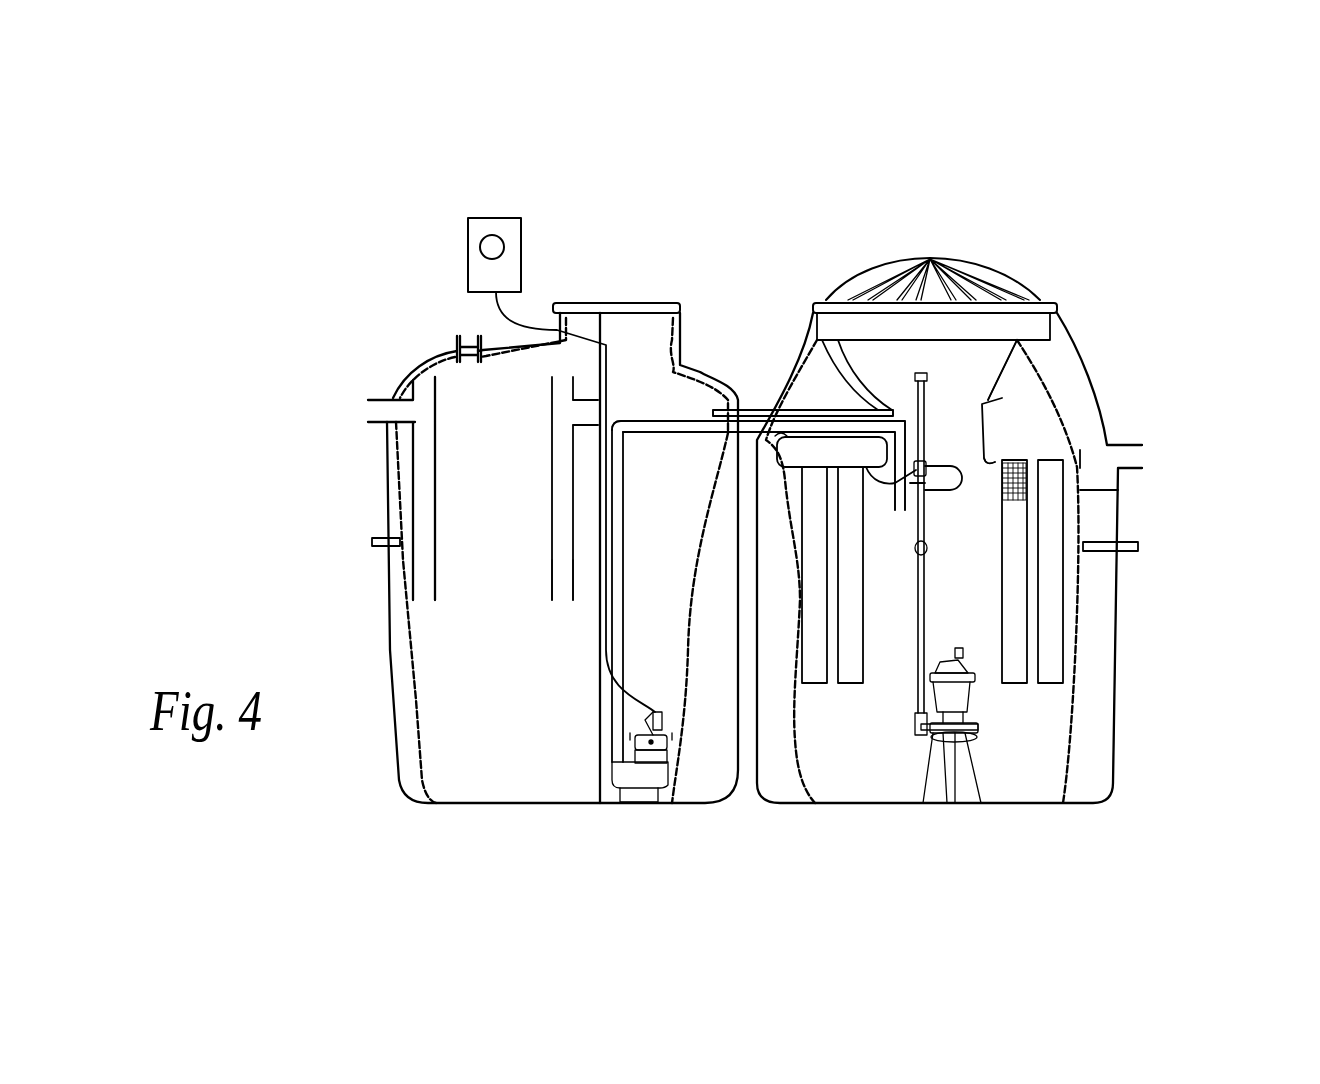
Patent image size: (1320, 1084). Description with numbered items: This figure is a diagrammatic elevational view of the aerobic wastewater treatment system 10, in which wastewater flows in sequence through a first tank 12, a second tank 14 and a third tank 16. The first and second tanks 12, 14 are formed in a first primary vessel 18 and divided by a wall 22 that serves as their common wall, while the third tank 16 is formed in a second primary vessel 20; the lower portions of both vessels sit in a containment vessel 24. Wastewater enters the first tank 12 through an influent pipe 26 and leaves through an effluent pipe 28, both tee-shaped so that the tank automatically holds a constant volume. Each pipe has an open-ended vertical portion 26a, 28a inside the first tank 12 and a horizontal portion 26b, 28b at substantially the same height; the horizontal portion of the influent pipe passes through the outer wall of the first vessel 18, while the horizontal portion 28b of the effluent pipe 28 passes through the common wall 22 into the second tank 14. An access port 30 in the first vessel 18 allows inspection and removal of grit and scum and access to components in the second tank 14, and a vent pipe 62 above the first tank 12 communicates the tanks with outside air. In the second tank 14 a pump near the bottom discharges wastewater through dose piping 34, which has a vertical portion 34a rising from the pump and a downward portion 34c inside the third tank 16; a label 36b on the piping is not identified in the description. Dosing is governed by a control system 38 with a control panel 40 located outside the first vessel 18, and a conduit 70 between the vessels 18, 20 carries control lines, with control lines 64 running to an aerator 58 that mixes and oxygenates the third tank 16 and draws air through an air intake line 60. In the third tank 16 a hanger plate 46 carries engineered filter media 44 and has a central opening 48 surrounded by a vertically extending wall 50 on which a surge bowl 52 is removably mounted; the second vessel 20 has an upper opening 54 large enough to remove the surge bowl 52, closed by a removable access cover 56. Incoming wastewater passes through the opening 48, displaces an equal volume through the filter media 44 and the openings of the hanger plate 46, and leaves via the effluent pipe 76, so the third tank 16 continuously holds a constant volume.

The aerobic wastewater treatment system 10 is at (726, 168).
The first tank 12 is at (497, 708).
The second tank 14 is at (664, 647).
The third tank 16 is at (857, 755).
The first primary vessel 18 is at (512, 806).
The second primary vessel 20 is at (878, 806).
The wall 22 is at (600, 790).
The containment vessel 24 is at (1120, 663).
The influent pipe 26 is at (372, 396).
The vertically extending portion of influent pipe 26a is at (437, 505).
The horizontally extending portion of influent pipe 26b is at (378, 426).
The effluent pipe 28 is at (546, 410).
The vertically extending portion of effluent pipe 28a is at (550, 572).
The horizontally extending portion of effluent pipe 28b is at (594, 394).
The access port 30 is at (646, 304).
The dose piping 34 is at (686, 434).
The vertical portion of dose piping 34a is at (625, 566).
The downward portion of dose piping 34c is at (914, 458).
The conduit elbow 36b is at (648, 430).
The control system 38 is at (498, 214).
The control panel 40 is at (522, 233).
The engineered filter media 44 is at (1020, 684).
The hanger plate 46 is at (992, 450).
The central opening 48 is at (992, 420).
The vertically extending wall 50 is at (1012, 350).
The surge bowl 52 is at (1020, 330).
The upper opening 54 is at (830, 320).
The removable access cover 56 is at (958, 266).
The aerator 58 is at (980, 737).
The air intake line 60 is at (927, 398).
The vent pipe 62 is at (455, 346).
The control lines 64 is at (892, 495).
The conduit 70 is at (735, 437).
The effluent pipe of third tank 76 is at (781, 440).